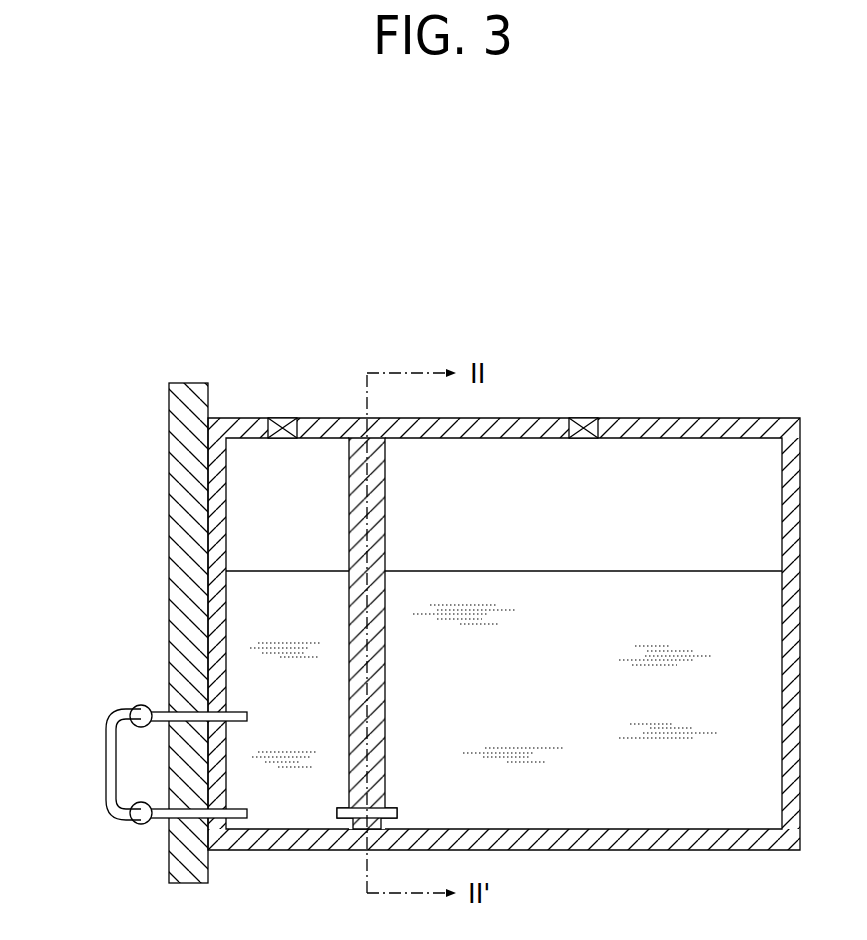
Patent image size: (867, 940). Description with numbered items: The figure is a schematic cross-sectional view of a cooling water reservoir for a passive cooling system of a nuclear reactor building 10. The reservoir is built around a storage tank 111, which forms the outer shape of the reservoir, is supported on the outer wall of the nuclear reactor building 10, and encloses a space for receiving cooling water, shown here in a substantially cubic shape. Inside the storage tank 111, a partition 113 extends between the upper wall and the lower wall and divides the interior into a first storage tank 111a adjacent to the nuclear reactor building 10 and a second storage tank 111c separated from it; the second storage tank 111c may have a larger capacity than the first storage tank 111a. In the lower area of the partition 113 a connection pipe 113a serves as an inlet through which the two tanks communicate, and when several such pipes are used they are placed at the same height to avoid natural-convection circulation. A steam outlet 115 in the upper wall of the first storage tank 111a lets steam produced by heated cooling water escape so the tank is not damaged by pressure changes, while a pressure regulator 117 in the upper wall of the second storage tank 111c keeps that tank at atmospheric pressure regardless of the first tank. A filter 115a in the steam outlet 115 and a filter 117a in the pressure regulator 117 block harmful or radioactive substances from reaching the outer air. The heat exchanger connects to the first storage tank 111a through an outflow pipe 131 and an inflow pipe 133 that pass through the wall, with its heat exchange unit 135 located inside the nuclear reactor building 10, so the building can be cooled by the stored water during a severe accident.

The nuclear reactor building 10 is at (187, 383).
The storage tank 111 is at (696, 418).
The first storage tank 111a is at (275, 797).
The second storage tank 111c is at (621, 808).
The partition 113 is at (348, 452).
The connection pipe 113a is at (342, 822).
The steam outlet 115 is at (268, 418).
The filter 115a is at (288, 418).
The pressure regulator 117 is at (569, 418).
The filter 117a is at (590, 418).
The outflow pipe 131 is at (162, 707).
The inflow pipe 133 is at (162, 822).
The heat exchange unit 135 is at (106, 764).